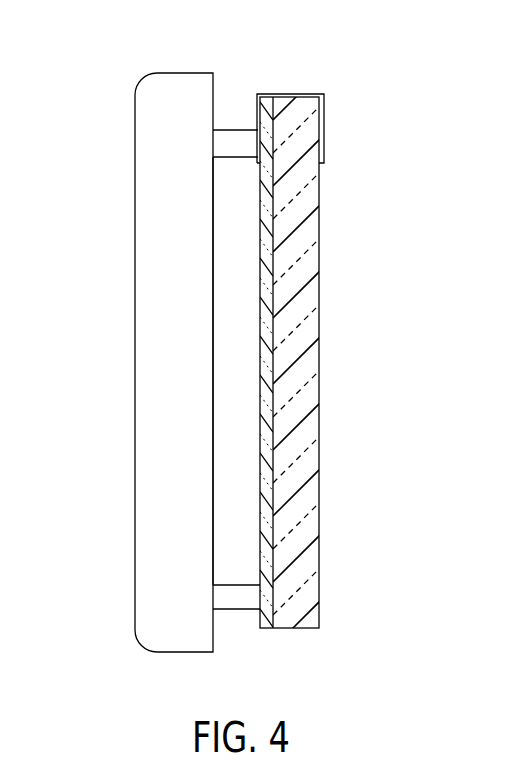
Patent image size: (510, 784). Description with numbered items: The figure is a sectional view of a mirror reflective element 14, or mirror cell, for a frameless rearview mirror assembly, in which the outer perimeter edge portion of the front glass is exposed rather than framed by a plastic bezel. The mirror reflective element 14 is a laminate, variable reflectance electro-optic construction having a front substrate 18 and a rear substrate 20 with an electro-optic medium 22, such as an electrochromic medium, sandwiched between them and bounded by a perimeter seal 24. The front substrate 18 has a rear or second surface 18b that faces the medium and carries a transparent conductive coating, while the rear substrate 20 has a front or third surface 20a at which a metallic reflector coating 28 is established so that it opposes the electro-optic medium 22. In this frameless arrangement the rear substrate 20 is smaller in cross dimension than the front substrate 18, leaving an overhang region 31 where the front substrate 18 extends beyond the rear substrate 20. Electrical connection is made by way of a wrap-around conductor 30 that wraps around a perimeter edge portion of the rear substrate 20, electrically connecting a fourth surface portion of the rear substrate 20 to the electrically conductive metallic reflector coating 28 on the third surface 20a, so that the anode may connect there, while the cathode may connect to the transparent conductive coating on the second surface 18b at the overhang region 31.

The mirror reflective element 14 is at (370, 95).
The front substrate 18 is at (142, 157).
The second surface 18b is at (217, 563).
The rear substrate 20 is at (315, 350).
The third surface 20a is at (275, 489).
The electro-optic medium 22 is at (228, 458).
The perimeter seal 24 is at (230, 138).
The metallic reflector coating 28 is at (268, 512).
The wrap-around conductor 30 is at (323, 147).
The overhang region 31 is at (222, 640).